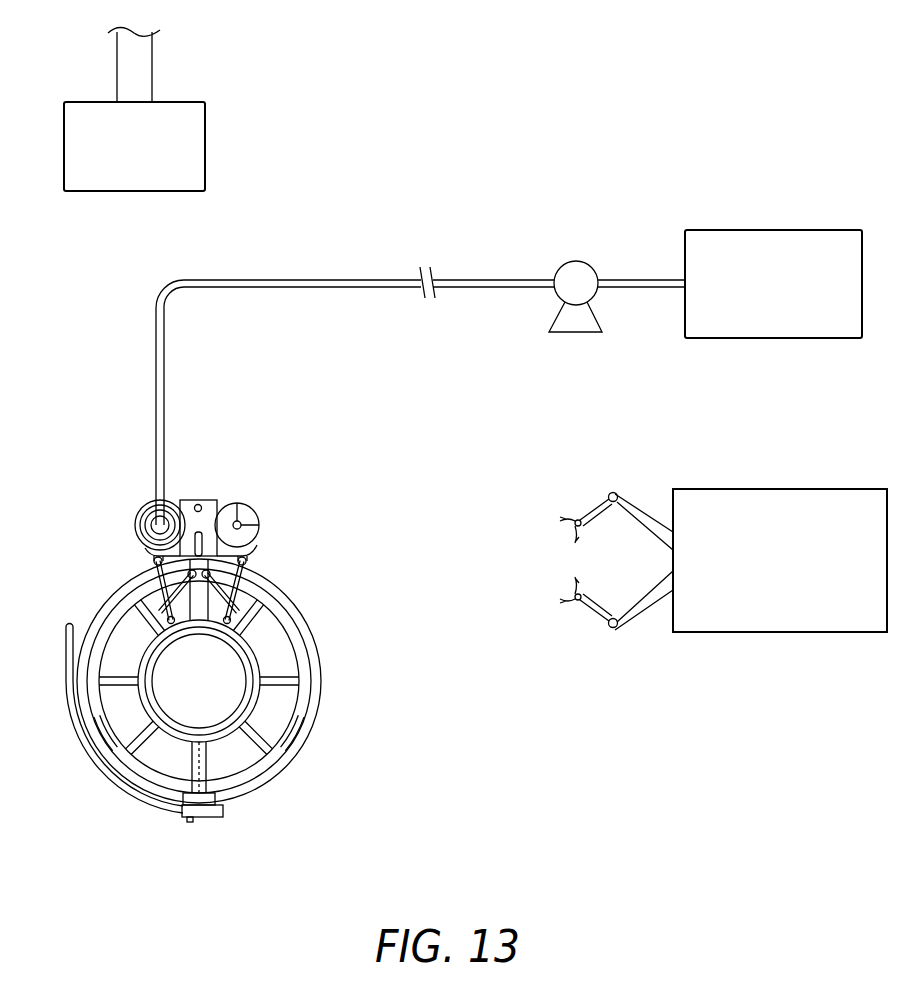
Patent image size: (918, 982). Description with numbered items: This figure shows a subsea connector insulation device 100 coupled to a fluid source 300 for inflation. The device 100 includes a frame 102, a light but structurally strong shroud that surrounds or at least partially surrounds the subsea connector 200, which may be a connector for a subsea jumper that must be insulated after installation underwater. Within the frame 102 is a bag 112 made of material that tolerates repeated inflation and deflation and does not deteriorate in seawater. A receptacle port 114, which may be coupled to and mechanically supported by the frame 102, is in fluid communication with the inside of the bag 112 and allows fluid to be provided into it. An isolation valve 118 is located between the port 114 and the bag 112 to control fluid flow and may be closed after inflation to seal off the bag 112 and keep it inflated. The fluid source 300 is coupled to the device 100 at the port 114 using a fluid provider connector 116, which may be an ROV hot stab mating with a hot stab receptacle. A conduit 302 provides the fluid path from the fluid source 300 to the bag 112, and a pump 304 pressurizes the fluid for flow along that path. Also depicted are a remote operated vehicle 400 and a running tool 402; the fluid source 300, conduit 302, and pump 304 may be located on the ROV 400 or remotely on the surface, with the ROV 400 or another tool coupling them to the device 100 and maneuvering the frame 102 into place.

The subsea connector insulation device 100 is at (212, 638).
The frame 102 is at (98, 615).
The bag 112 is at (268, 647).
The receptacle port 114 is at (137, 540).
The fluid provider connector 116 is at (150, 522).
The isolation valve 118 is at (255, 506).
The subsea connector 200 is at (230, 693).
The fluid source 300 is at (800, 297).
The conduit 302 is at (313, 279).
The pump 304 is at (573, 333).
The remote operated vehicle (ROV) 400 is at (804, 573).
The running tool 402 is at (157, 158).